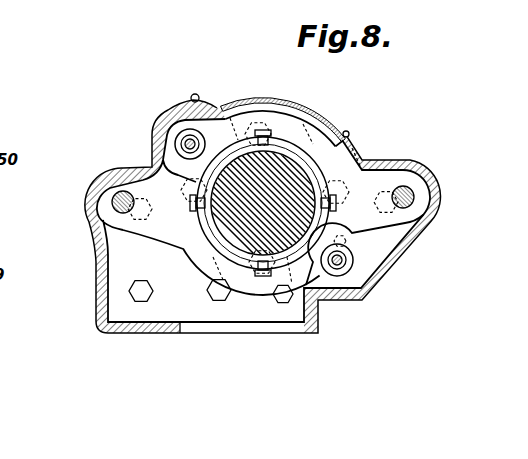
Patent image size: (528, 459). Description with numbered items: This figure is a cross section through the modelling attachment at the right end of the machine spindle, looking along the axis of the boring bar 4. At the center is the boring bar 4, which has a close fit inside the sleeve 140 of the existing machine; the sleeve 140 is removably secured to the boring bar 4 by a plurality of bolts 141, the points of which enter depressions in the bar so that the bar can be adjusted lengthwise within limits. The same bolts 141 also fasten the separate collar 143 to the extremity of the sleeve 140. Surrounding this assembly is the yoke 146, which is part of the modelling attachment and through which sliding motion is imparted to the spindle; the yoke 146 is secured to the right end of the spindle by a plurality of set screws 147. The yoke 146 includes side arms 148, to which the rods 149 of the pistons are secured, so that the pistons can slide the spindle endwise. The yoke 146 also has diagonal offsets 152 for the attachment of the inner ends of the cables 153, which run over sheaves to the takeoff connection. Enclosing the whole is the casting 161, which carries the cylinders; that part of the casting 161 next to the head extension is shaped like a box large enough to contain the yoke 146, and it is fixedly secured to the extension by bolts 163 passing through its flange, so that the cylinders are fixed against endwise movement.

The boring bar 4 is at (213, 213).
The sleeve 140 is at (198, 196).
The bolts 141 is at (204, 209).
The collar 143 is at (306, 265).
The yoke 146 is at (290, 115).
The set screws 147 is at (250, 101).
The side arms 148 is at (113, 185).
The rods 149 is at (116, 205).
The diagonal offsets 152 is at (158, 128).
The cables 153 is at (191, 138).
The casting 161 is at (92, 197).
The bolts 163 is at (130, 288).